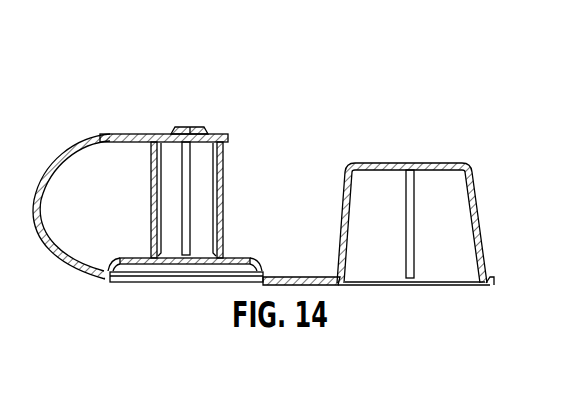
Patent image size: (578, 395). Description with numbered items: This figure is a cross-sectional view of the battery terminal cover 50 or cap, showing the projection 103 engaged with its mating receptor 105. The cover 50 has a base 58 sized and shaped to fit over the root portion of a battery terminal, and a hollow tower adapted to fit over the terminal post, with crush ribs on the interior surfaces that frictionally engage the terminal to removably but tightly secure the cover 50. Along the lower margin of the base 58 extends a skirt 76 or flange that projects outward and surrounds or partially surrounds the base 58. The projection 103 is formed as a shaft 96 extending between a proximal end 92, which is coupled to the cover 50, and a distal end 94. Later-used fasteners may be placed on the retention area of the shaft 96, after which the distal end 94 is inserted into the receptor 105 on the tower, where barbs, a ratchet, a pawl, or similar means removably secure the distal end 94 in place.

The battery terminal cover 50 is at (394, 116).
The base 58 is at (295, 277).
The skirt 76 is at (492, 278).
The proximal end 92 is at (108, 283).
The distal end 94 is at (214, 134).
The shaft 96 is at (39, 203).
The projection 103 is at (71, 180).
The receptor 105 is at (195, 127).